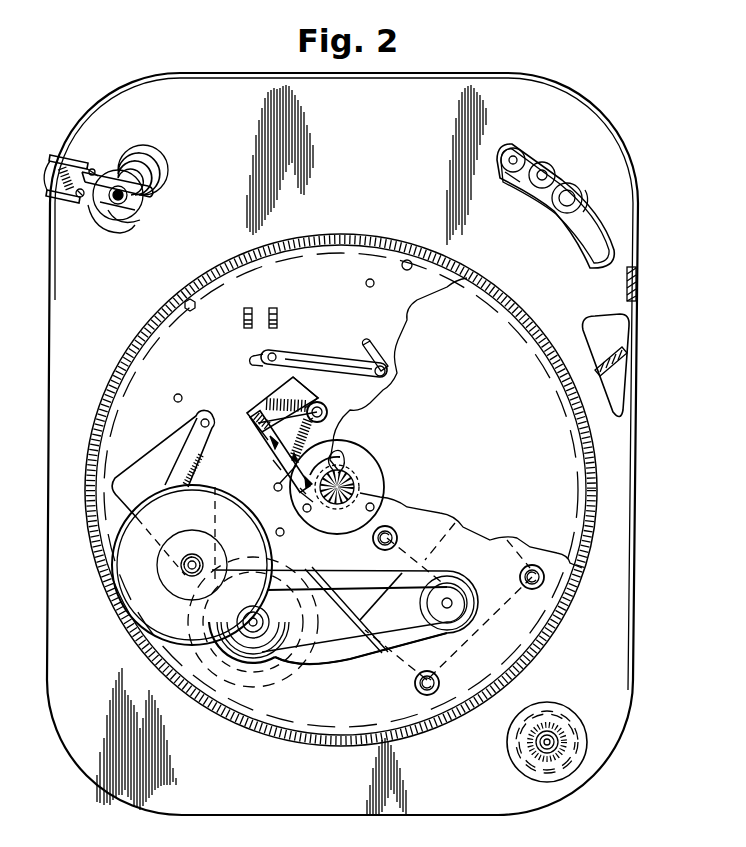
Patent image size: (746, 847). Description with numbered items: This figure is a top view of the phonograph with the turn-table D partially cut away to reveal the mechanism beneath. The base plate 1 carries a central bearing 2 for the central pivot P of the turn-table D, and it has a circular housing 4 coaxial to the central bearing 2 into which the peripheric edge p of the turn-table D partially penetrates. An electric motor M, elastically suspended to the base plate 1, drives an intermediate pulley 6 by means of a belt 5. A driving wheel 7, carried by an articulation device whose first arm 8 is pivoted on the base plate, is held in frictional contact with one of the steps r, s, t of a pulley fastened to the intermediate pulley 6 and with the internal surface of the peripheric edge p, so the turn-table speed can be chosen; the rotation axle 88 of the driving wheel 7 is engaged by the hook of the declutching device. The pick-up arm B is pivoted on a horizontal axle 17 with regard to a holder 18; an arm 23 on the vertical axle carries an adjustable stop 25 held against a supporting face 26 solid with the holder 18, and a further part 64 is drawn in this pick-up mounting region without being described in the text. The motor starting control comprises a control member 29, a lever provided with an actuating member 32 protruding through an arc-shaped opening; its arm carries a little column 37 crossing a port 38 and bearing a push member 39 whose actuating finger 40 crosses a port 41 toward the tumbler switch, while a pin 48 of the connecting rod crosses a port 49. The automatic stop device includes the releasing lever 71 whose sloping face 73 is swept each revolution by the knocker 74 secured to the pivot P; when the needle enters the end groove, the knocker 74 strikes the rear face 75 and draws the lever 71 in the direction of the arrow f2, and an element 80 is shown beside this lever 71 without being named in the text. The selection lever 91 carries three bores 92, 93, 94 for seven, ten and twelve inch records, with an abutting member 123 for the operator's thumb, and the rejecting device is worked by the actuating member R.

The base plate 1 is at (342, 444).
The central bearing 2 is at (337, 506).
The circular housing 4 is at (239, 264).
The belt 5 is at (330, 654).
The intermediate pulley 6 is at (284, 613).
The driving wheel 7 is at (192, 565).
The first arm 8 is at (178, 460).
The horizontal axle 17 is at (93, 168).
The holder 18 is at (134, 192).
The arm 23 is at (112, 178).
The adjustable stop 25 is at (84, 200).
The supporting face 26 is at (100, 216).
The control member 29 is at (555, 206).
The actuating member 32 is at (586, 208).
The little column 37 is at (388, 371).
The port 38 is at (372, 343).
The push member 39 is at (322, 353).
The actuating finger 40 is at (273, 352).
The port 41 is at (252, 360).
The pin 48 is at (320, 406).
The port 49 is at (283, 397).
The lever 64 is at (130, 212).
The releasing lever 71 is at (265, 450).
The sloping face 73 is at (340, 470).
The knocker 74 is at (298, 498).
The rear face 75 is at (275, 490).
The stop 80 is at (261, 434).
The rotation axle 88 is at (191, 558).
The lever 91 is at (520, 180).
The bore 92 is at (515, 156).
The bore 93 is at (546, 171).
The bore 94 is at (570, 195).
The abutting member 123 is at (626, 283).
The arm B is at (70, 158).
The turn-table D is at (456, 423).
The electric motor M is at (418, 601).
The central pivot P is at (338, 471).
The actuating member R is at (616, 352).
The arrow f2 is at (272, 463).
The peripheric edge p is at (197, 305).
The step r is at (281, 603).
The step s is at (286, 629).
The step t is at (250, 617).